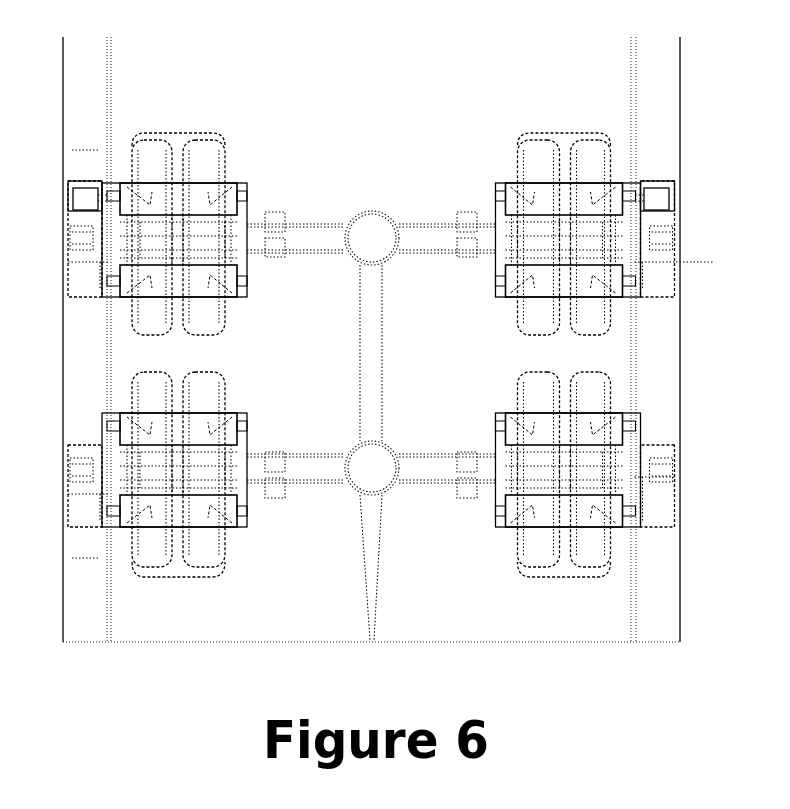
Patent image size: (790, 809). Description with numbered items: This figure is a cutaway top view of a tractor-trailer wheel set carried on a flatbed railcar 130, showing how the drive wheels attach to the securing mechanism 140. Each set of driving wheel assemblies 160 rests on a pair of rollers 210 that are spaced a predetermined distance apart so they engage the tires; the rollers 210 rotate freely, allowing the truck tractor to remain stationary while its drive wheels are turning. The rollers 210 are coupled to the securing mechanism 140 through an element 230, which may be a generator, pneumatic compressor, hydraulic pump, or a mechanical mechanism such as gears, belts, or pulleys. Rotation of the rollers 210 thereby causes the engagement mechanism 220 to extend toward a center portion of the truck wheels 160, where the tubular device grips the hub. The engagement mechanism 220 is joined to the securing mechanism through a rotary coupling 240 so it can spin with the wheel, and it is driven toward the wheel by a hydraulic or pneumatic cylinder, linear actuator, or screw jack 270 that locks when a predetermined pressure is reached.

The flatbed railcar 130 is at (371, 339).
The securing mechanism 140 is at (370, 339).
The driving wheel assemblies 160 is at (226, 160).
The rollers 210 is at (131, 182).
The engagement mechanism 220 is at (105, 231).
The generator, pneumatic compressor, hydraulic pump, or mechanical mechanism 230 is at (371, 196).
The rotary coupling 240 is at (80, 238).
The hydraulic or pneumatic cylinder 270 is at (85, 262).